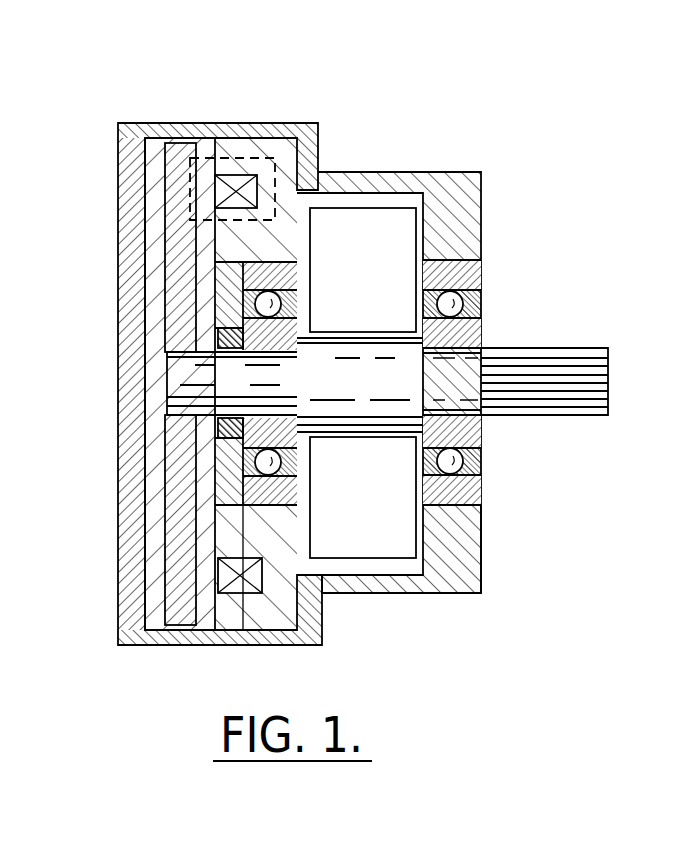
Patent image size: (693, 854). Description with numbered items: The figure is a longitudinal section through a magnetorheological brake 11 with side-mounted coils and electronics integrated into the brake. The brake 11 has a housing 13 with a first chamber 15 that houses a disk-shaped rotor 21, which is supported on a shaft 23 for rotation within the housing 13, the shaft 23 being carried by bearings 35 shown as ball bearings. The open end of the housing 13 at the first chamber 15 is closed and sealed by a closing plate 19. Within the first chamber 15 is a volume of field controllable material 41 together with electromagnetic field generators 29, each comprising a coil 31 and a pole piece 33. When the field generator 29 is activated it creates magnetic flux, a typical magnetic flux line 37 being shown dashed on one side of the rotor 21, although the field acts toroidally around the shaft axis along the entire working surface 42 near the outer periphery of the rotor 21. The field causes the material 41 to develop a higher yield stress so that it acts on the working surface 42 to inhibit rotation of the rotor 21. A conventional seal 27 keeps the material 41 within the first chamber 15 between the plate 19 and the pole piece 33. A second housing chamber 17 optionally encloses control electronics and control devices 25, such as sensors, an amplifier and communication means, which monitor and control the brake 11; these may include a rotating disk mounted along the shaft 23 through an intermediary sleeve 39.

The brake 11 is at (300, 82).
The housing 13 is at (472, 235).
The first chamber 15 is at (155, 623).
The second housing chamber 17 is at (412, 567).
The closing plate 19 is at (133, 222).
The rotor 21 is at (172, 280).
The shaft 23 is at (175, 378).
The control electronics and control devices 25 is at (375, 217).
The seal 27 is at (270, 313).
The electromagnetic field generator 29 is at (270, 594).
The coil 31 is at (242, 588).
The pole piece 33 is at (215, 518).
The bearings 35 is at (472, 270).
The magnetic flux line 37 is at (186, 116).
The intermediary sleeve 39 is at (363, 393).
The field controllable material 41 is at (155, 453).
The working surface 42 is at (207, 567).